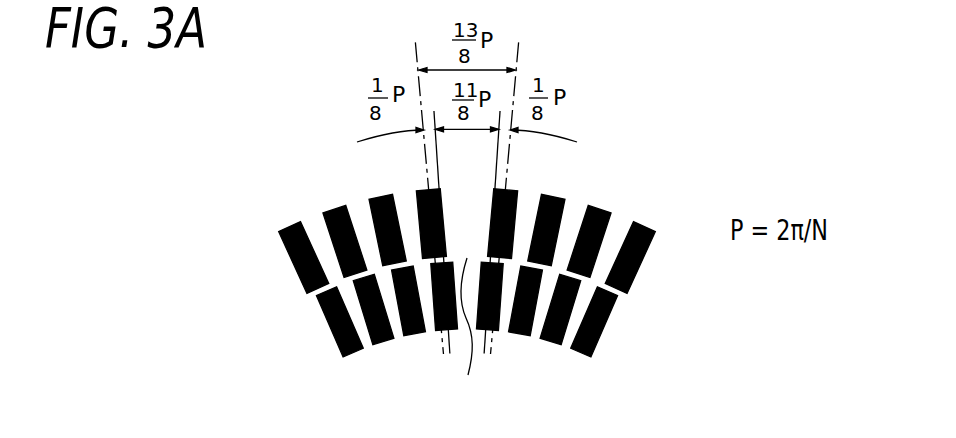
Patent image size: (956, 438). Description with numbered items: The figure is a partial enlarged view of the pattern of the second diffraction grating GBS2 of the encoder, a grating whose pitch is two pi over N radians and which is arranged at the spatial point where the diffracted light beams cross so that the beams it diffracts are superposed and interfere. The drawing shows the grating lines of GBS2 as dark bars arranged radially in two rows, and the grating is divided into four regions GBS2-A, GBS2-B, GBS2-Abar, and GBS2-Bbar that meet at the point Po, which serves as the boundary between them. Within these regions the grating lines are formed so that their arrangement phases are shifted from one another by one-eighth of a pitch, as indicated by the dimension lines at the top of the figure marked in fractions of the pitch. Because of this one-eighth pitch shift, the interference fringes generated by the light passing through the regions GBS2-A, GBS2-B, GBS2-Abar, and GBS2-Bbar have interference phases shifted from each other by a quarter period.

The second diffraction grating GBS2 is at (144, 240).
The region GBS2-A of the second diffraction grating GBS2-A is at (322, 207).
The region GBS2-B of the second diffraction grating GBS2-B is at (368, 338).
The region GBS2-B-bar of the second diffraction grating GBS2-Bbar is at (691, 154).
The region GBS2-A-bar of the second diffraction grating GBS2-Abar is at (713, 380).
The point P0 Po is at (464, 336).